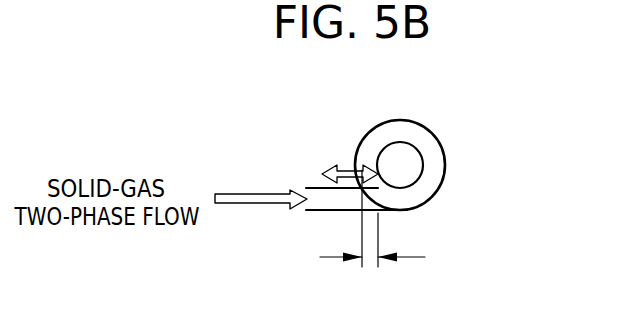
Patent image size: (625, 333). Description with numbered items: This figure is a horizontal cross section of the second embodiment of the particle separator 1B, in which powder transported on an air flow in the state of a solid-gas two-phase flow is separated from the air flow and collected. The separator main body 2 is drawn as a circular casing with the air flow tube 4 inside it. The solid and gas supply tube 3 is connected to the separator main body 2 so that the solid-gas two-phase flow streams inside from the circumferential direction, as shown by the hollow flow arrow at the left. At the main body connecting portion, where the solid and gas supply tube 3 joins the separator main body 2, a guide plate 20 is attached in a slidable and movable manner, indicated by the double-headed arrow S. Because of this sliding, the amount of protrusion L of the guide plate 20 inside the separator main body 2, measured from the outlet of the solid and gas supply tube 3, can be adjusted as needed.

The particle separator 1B is at (500, 112).
The separator main body 2 is at (447, 166).
The solid and gas supply tube 3 is at (323, 211).
The air flow tube 4 is at (417, 177).
The guide plate 20 is at (376, 190).
The arrow indicating sliding movement S is at (348, 168).
The amount of protrusion L is at (372, 236).